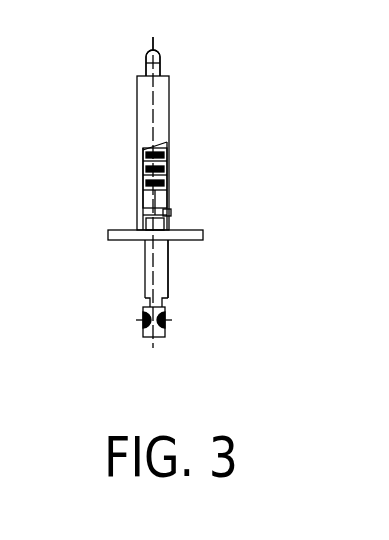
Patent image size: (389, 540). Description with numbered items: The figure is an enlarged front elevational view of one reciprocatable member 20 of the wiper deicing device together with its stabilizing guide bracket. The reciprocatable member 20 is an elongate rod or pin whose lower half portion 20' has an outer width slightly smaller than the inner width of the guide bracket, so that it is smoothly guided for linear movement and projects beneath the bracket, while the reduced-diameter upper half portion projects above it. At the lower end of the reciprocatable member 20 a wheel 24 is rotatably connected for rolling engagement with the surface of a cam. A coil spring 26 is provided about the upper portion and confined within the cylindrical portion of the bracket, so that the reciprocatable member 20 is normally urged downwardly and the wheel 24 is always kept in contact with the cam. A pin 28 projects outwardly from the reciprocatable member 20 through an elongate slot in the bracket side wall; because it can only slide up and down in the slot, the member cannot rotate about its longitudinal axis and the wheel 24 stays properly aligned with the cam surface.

The reciprocatable member 20 is at (197, 192).
The lower half portion 20' is at (221, 291).
The wheel 24 is at (145, 306).
The coil spring 26 is at (143, 167).
The pin 28 is at (171, 213).